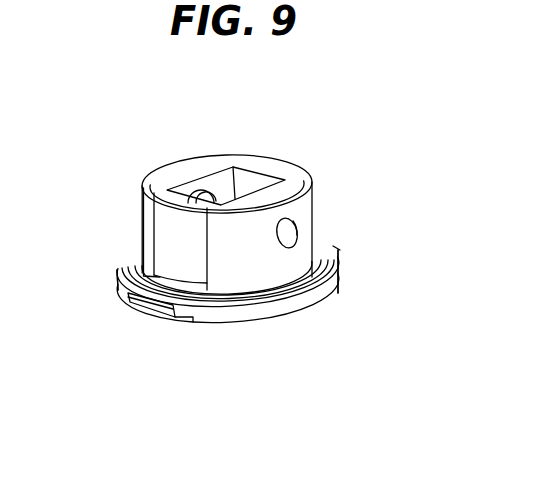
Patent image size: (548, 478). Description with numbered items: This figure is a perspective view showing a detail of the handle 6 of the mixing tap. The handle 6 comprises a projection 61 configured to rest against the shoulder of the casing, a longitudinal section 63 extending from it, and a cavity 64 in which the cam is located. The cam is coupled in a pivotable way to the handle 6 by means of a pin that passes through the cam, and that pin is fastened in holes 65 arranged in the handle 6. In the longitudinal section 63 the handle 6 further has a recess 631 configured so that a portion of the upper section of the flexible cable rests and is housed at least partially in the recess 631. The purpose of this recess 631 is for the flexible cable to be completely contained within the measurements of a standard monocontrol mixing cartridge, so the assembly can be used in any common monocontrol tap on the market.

The handle 6 is at (120, 135).
The projection 61 is at (225, 323).
The longitudinal section 63 is at (243, 268).
The recess 631 is at (174, 238).
The cavity 64 is at (241, 174).
The holes 65 is at (302, 237).